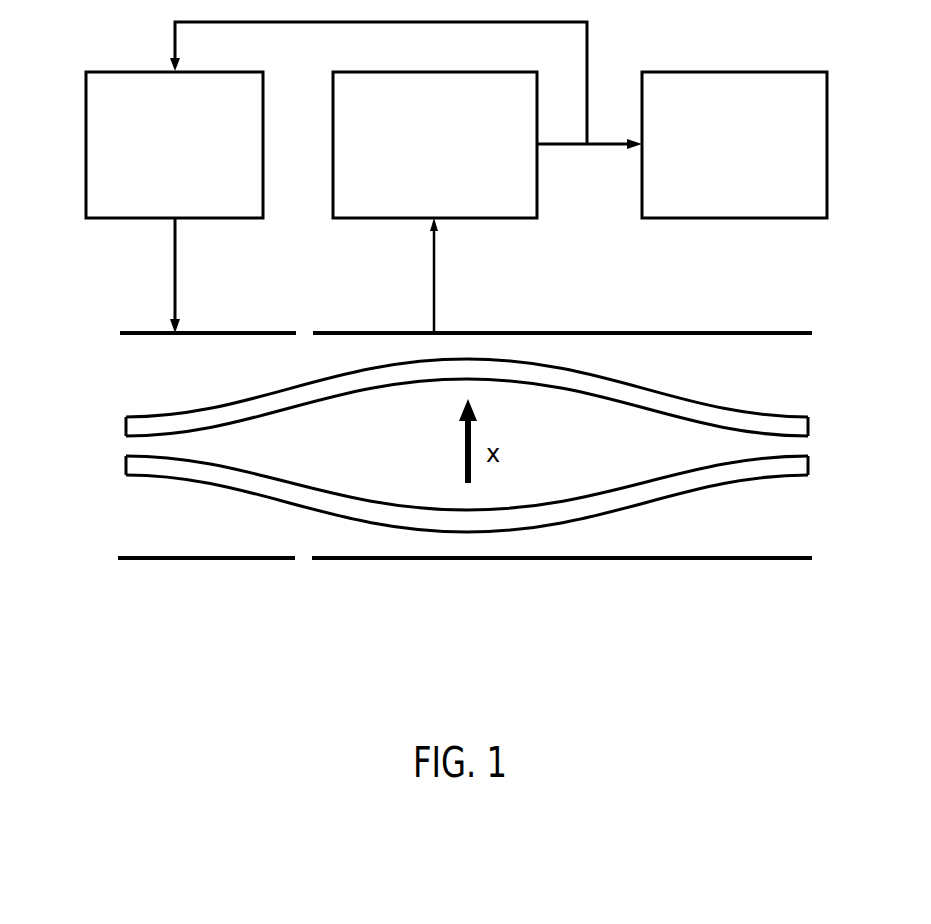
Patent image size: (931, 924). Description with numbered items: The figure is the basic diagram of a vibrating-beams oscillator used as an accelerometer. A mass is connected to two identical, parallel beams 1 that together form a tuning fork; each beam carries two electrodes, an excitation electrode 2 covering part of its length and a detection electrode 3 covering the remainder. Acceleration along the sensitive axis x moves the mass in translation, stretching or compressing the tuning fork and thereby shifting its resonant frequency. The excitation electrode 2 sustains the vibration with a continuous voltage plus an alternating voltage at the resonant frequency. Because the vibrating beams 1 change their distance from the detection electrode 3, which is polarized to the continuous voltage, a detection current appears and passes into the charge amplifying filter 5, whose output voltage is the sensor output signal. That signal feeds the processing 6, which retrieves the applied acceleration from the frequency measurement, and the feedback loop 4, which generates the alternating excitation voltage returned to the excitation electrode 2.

The beam 1 is at (310, 493).
The excitation electrode 2 is at (142, 332).
The detection electrode 3 is at (755, 332).
The feedback loop 4 is at (128, 78).
The charge amplifying filter 5 is at (463, 209).
The processing 6 is at (750, 80).